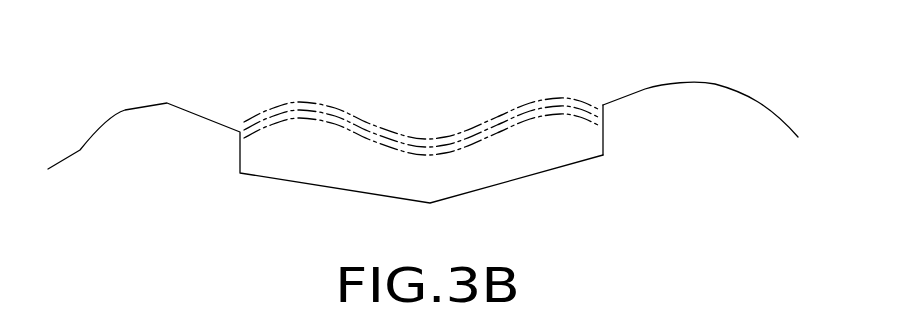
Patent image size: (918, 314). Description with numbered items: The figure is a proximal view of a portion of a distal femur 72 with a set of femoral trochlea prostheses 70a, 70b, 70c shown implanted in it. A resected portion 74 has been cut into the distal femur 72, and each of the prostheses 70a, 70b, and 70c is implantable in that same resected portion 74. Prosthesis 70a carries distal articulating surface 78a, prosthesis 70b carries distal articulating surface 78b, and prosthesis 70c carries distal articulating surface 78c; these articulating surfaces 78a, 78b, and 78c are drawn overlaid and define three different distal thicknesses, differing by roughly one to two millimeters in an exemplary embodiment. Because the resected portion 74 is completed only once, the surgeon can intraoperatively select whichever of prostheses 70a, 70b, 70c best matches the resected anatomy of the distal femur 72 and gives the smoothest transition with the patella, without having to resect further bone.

The femoral trochlea prosthesis 70a is at (273, 143).
The femoral trochlea prosthesis 70b is at (422, 91).
The femoral trochlea prosthesis 70c is at (422, 91).
The distal femur 72 is at (727, 100).
The resected portion 74 is at (604, 147).
The distal articulating surface 78a is at (388, 155).
The distal articulating surface 78b is at (482, 120).
The distal articulating surface 78c is at (597, 65).